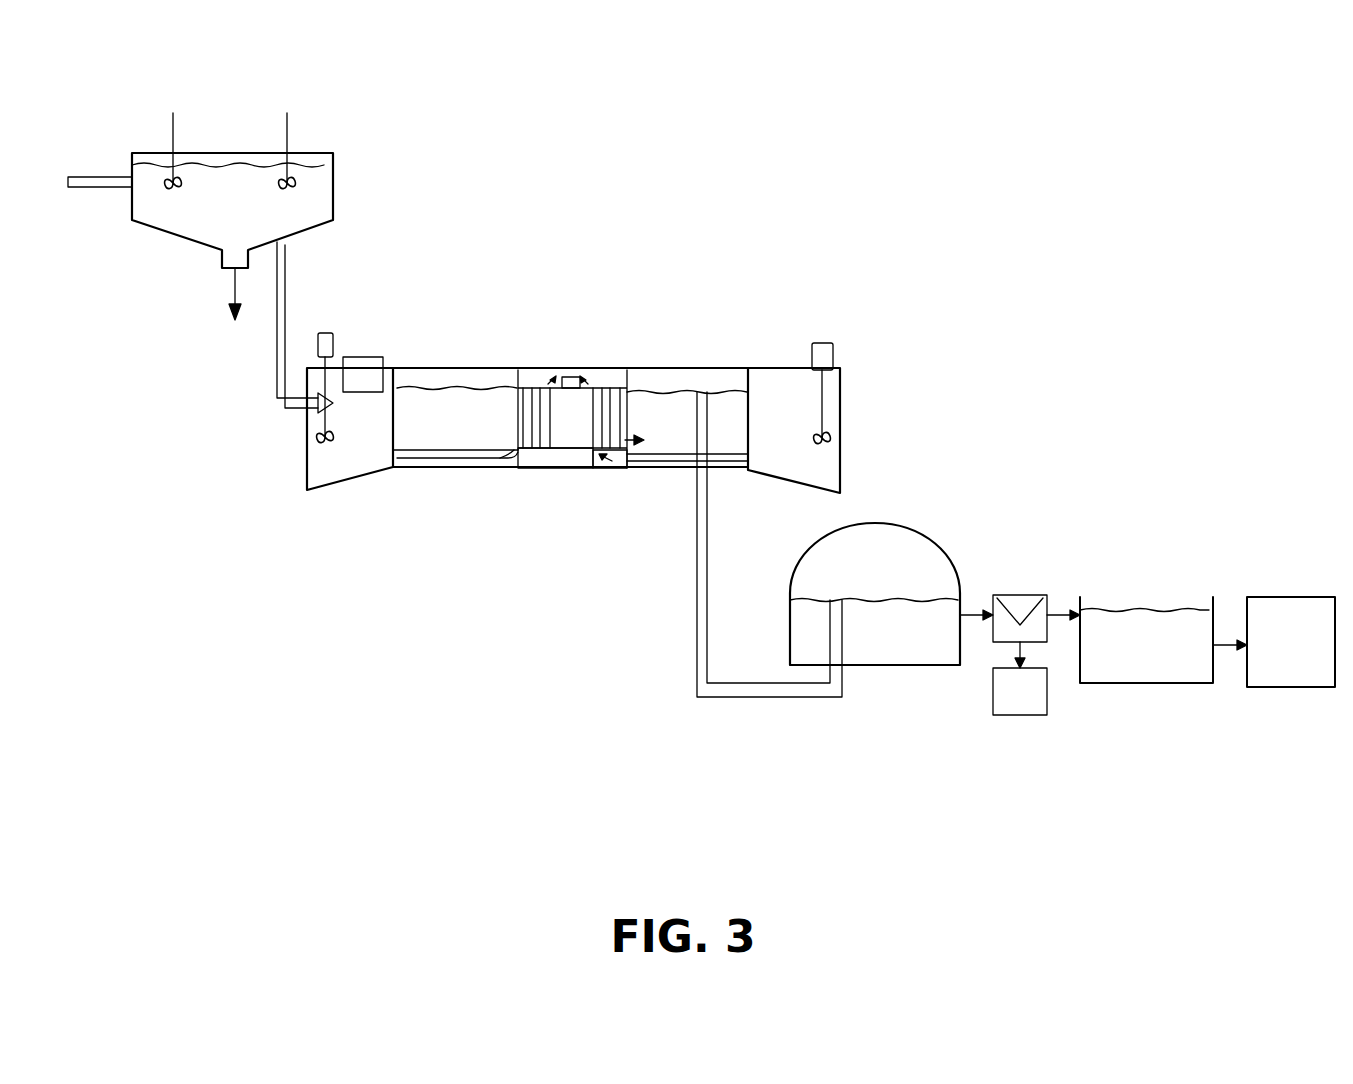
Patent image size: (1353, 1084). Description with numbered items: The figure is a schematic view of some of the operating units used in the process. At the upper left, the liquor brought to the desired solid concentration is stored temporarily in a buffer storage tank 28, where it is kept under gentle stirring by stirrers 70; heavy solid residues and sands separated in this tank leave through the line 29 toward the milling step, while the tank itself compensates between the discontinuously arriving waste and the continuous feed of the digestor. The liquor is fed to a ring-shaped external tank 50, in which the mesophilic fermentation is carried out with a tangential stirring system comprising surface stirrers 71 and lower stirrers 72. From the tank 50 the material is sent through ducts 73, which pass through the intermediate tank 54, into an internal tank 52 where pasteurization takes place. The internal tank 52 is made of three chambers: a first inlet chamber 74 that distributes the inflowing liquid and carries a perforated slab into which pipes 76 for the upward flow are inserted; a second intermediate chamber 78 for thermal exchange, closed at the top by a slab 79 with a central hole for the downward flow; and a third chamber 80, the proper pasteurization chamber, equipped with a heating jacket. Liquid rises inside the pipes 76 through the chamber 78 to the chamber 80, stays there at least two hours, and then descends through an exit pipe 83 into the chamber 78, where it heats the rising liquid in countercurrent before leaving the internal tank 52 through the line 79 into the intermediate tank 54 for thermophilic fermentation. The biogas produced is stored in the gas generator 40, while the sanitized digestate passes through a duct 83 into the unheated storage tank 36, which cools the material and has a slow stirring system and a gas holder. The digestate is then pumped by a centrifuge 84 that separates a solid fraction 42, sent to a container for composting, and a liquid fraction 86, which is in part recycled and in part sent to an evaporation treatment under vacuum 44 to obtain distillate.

The buffer storage tank 28 is at (170, 260).
The line 29 is at (233, 313).
The stirrers 70 is at (170, 128).
The ring-shaped external tank 50 is at (778, 353).
The internal tank 52 is at (614, 345).
The intermediate tank 54 is at (457, 350).
The surface stirrers 71 is at (367, 358).
The lower stirrers 72 is at (826, 358).
The ducts 73 is at (430, 457).
The first inlet chamber 74 is at (552, 462).
The pipes 76 is at (593, 468).
The second intermediate chamber 78 is at (520, 410).
The slab 79 is at (652, 430).
The third chamber 80 is at (546, 372).
The exit pipe 83 is at (720, 692).
The gas generator 40 is at (893, 543).
The storage tank 36 is at (880, 650).
The centrifuge 84 is at (1027, 572).
The solid fraction 42 is at (1020, 698).
The liquid fraction 86 is at (1143, 645).
The evaporation treatment under vacuum 44 is at (1288, 675).